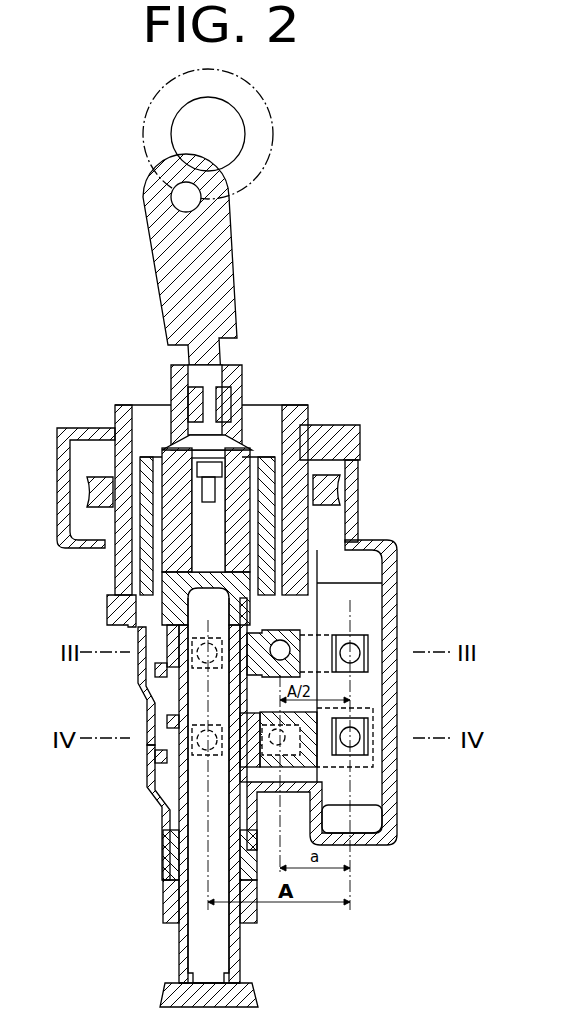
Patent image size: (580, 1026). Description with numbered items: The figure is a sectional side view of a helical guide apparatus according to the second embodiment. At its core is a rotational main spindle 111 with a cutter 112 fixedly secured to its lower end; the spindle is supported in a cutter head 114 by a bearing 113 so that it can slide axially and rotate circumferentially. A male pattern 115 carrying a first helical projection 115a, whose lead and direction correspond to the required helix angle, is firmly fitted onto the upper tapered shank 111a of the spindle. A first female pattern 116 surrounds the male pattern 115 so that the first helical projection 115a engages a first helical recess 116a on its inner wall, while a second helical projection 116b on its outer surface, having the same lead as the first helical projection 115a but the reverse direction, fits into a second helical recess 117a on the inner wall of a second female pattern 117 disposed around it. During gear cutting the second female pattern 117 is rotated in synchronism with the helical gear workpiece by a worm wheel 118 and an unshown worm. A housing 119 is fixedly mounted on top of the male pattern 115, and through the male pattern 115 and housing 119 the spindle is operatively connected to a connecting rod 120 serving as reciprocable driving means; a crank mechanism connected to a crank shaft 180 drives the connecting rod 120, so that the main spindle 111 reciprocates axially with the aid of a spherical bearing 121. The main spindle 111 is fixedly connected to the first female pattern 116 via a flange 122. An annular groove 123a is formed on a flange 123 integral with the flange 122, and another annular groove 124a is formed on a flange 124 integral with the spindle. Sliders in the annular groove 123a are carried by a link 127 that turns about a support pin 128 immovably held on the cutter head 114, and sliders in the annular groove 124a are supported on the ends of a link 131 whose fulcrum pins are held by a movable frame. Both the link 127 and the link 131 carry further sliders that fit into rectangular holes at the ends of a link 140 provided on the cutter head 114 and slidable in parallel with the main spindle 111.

The crank shaft 180 is at (240, 137).
The connecting rod 120 is at (233, 248).
The spherical bearing 121 is at (233, 382).
The housing 119 is at (229, 400).
The upper tapered shank 111a is at (165, 440).
The first female pattern 116 is at (142, 553).
The first helical recess 116a is at (256, 490).
The first helical projection 115a is at (293, 470).
The male pattern 115 is at (168, 560).
The second female pattern 117 is at (105, 515).
The worm wheel 118 is at (100, 490).
The second helical projection 116b is at (340, 478).
The second helical recess 117a is at (343, 552).
The flange 122 is at (135, 613).
The flange 123 is at (157, 680).
The annular groove 123a is at (158, 663).
The flange 124 is at (160, 787).
The annular groove 124a is at (163, 750).
The rotational main spindle 111 is at (183, 955).
The cutter head 114 is at (165, 830).
The bearing 113 is at (165, 918).
The cutter 112 is at (170, 993).
The link 127 is at (262, 662).
The support pin 128 is at (290, 650).
The link 131 is at (290, 768).
The link 140 is at (372, 693).